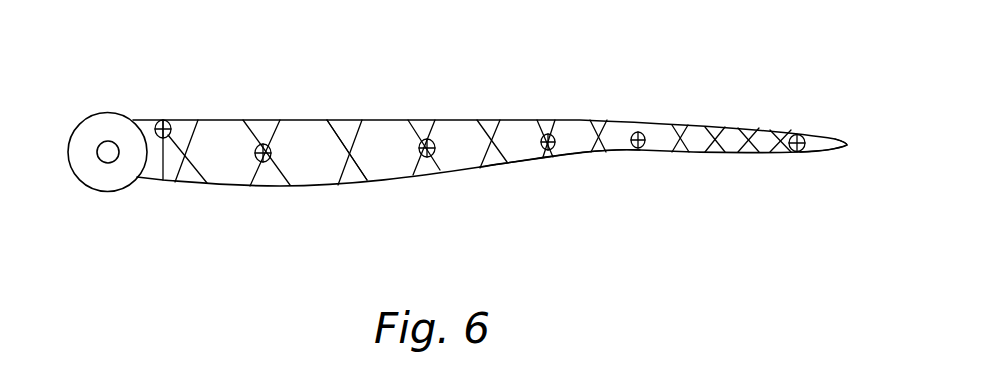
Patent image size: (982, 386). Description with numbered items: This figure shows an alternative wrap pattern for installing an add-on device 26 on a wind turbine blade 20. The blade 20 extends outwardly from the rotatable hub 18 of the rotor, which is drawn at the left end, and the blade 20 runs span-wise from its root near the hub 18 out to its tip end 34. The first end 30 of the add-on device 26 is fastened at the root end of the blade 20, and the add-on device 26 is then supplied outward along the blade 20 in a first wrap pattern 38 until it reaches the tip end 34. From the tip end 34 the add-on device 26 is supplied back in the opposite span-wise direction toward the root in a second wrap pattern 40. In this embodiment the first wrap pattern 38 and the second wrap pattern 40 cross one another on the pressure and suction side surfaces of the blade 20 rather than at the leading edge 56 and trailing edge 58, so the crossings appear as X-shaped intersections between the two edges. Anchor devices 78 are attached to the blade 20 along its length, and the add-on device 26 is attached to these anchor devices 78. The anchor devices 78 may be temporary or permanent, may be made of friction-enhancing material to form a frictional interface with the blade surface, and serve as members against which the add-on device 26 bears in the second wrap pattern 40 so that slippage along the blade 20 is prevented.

The hub 18 is at (78, 123).
The rotor blade 20 is at (755, 88).
The add-on device 26 is at (495, 147).
The first end of the add-on device 30 is at (165, 180).
The tip end of the blade 34 is at (846, 148).
The first wrap pattern 38 is at (335, 170).
The second wrap pattern 40 is at (365, 155).
The leading edge 56 is at (347, 118).
The trailing edge 58 is at (565, 155).
The anchor devices 78 is at (165, 120).